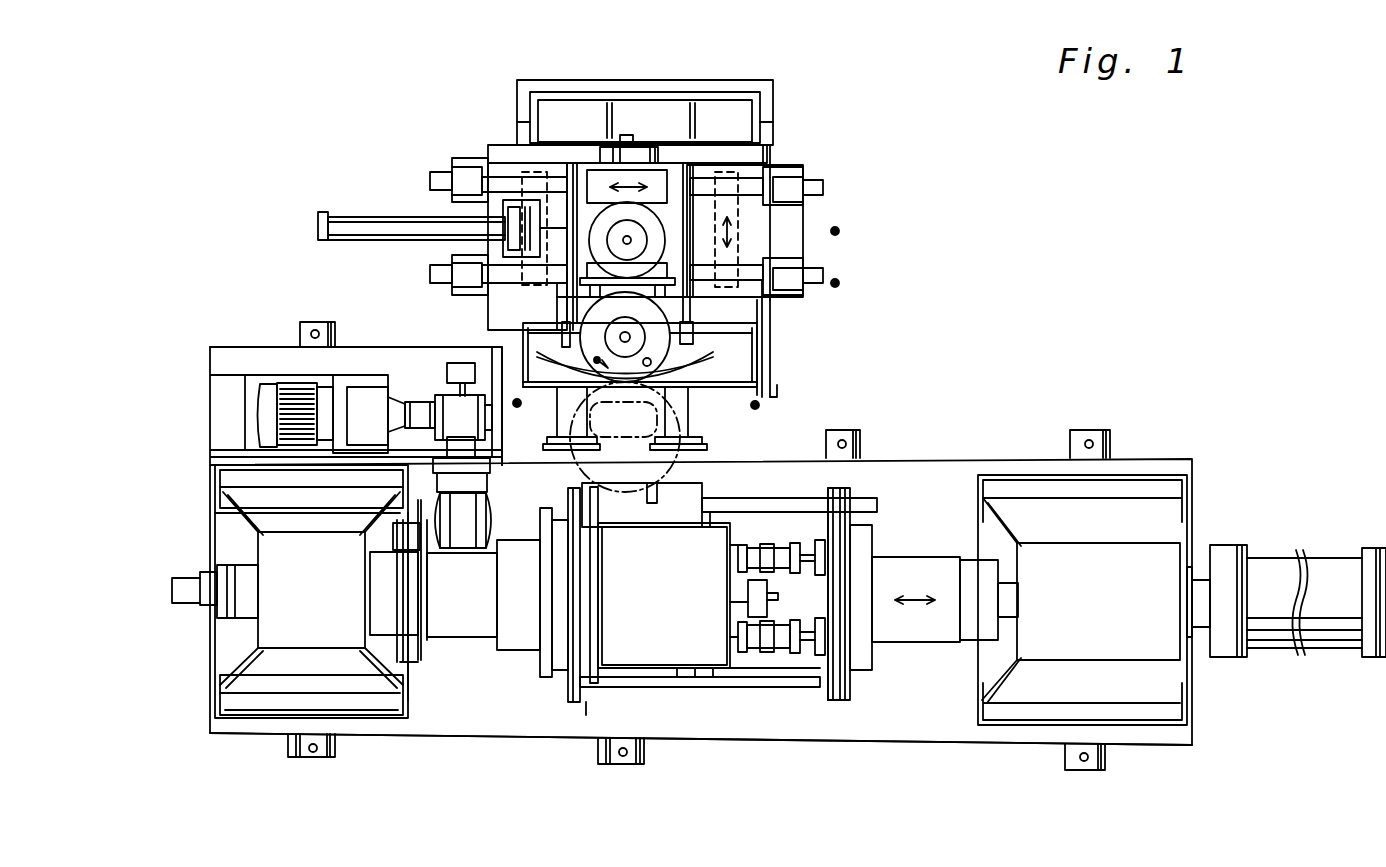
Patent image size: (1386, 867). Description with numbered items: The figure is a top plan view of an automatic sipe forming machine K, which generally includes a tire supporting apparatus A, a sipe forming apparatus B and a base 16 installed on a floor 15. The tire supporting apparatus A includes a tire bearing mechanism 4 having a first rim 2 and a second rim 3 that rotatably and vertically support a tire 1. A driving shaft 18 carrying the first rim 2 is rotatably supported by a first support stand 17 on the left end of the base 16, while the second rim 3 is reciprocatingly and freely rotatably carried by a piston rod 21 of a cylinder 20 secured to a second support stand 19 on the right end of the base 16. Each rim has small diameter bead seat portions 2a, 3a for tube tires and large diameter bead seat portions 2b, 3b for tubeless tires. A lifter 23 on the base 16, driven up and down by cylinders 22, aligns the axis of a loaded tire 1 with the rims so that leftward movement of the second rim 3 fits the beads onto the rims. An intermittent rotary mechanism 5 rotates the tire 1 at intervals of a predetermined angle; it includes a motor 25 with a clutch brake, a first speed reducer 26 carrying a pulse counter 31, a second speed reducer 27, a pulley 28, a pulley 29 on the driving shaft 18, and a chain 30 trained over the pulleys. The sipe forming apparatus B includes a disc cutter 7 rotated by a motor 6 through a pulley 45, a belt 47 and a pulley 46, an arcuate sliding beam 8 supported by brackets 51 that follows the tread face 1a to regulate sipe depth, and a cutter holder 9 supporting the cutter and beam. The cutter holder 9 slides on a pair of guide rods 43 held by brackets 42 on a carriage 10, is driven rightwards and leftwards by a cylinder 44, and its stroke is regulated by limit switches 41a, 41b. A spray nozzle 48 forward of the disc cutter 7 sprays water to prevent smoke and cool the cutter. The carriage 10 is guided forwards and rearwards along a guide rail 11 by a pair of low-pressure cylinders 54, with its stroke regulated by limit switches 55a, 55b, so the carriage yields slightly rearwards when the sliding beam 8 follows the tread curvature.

The tire 1 is at (672, 437).
The tread face 1a is at (665, 425).
The first rim 2 is at (585, 700).
The small diameter bead seat portion 2a is at (590, 680).
The large diameter bead seat portion 2b is at (590, 712).
The second rim 3 is at (855, 700).
The small diameter bead seat portion 3a is at (830, 700).
The large diameter bead seat portion 3b is at (845, 700).
The tire bearing mechanism 4 is at (522, 652).
The intermittent rotary mechanism 5 is at (323, 377).
The motor 6 is at (650, 237).
The disc cutter 7 is at (752, 305).
The arcuate sliding beam 8 is at (730, 355).
The cutter holder 9 is at (670, 243).
The carriage 10 is at (797, 222).
The guide rail 11 is at (755, 307).
The floor 15 is at (945, 367).
The base 16 is at (718, 720).
The first support stand 17 is at (265, 648).
The driving shaft 18 is at (452, 623).
The second support stand 19 is at (1138, 645).
The cylinder 20 is at (1315, 650).
The piston rod 21 is at (1010, 597).
The cylinders 22 is at (765, 548).
The lifter 23 is at (665, 650).
The motor 25 is at (285, 385).
The first speed reducer 26 is at (450, 415).
The second speed reducer 27 is at (468, 512).
The pulley 28 is at (402, 497).
The pulley 29 is at (418, 680).
The chain 30 is at (425, 563).
The pulse counter 31 is at (453, 365).
The limit switch 41a is at (759, 405).
The limit switch 41b is at (489, 473).
The brackets 42 is at (480, 185).
The guide rods 43 is at (753, 175).
The cylinder 44 is at (375, 212).
The pulley 45 is at (620, 230).
The pulley 46 is at (655, 330).
The belt 47 is at (575, 300).
The spray nozzle 48 is at (594, 368).
The brackets 51 is at (730, 378).
The cylinders 54 is at (522, 172).
The limit switch 55a is at (839, 231).
The limit switch 55b is at (839, 283).
The tire supporting apparatus A is at (508, 738).
The sipe forming apparatus B is at (782, 112).
The automatic sipe forming machine K is at (1040, 282).